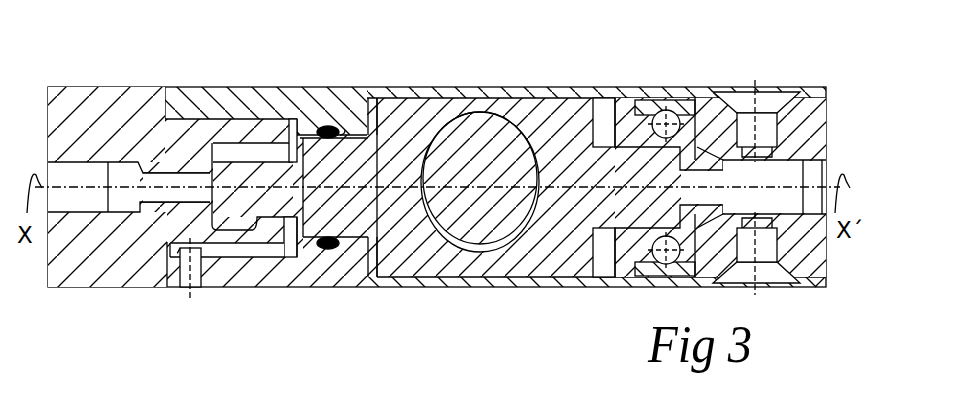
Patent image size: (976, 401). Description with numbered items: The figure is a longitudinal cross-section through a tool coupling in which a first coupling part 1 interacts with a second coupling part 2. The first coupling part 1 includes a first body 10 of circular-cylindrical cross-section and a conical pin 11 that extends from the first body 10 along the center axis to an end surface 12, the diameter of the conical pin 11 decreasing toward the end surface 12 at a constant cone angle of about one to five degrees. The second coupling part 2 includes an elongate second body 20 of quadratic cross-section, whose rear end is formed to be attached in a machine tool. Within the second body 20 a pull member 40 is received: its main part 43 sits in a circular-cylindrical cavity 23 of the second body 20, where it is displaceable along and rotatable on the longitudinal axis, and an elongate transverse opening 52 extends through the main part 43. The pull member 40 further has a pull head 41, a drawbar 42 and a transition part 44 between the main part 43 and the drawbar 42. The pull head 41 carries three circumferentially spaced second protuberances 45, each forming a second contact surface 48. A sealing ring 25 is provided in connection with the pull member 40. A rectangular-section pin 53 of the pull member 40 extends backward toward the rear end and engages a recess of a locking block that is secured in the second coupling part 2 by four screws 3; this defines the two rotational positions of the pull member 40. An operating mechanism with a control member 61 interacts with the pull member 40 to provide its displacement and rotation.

The first coupling part 1 is at (82, 100).
The second coupling part 2 is at (184, 86).
The screws 3 is at (770, 87).
The first body 10 is at (103, 268).
The conical pin 11 is at (226, 118).
The end surface 12 is at (305, 240).
The second body 20 is at (355, 105).
The circular-cylindrical cavity 23 is at (610, 268).
The sealing ring 25 is at (330, 250).
The pull member 40 is at (553, 86).
The pull head 41 is at (237, 158).
The drawbar 42 is at (273, 163).
The main part 43 is at (410, 118).
The transition part 44 is at (345, 203).
The second protuberances 45 is at (230, 218).
The second contact surface 48 is at (287, 220).
The transverse opening 52 is at (470, 255).
The pin 53 is at (640, 150).
The control member 61 is at (480, 145).